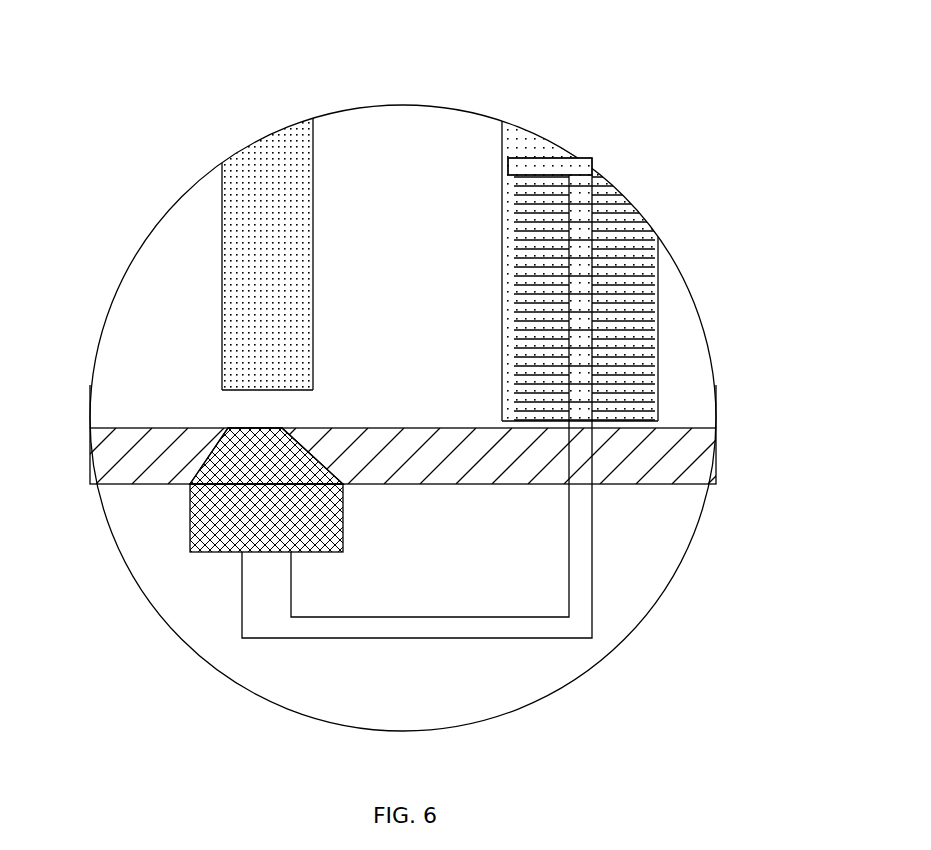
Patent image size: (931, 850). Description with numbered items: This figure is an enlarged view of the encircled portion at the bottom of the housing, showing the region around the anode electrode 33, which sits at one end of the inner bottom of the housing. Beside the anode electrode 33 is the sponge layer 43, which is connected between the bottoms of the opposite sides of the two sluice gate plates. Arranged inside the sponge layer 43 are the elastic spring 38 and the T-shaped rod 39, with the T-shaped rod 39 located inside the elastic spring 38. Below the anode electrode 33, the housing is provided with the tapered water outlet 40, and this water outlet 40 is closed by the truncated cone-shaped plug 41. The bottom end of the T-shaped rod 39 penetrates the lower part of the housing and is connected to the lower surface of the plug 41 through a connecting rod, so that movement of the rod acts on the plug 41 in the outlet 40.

The anode electrode 33 is at (257, 282).
The elastic spring 38 is at (623, 325).
The T-shaped rod 39 is at (592, 530).
The tapered water outlet 40 is at (205, 460).
The truncated cone-shaped plug 41 is at (237, 513).
The sponge layer 43 is at (540, 153).